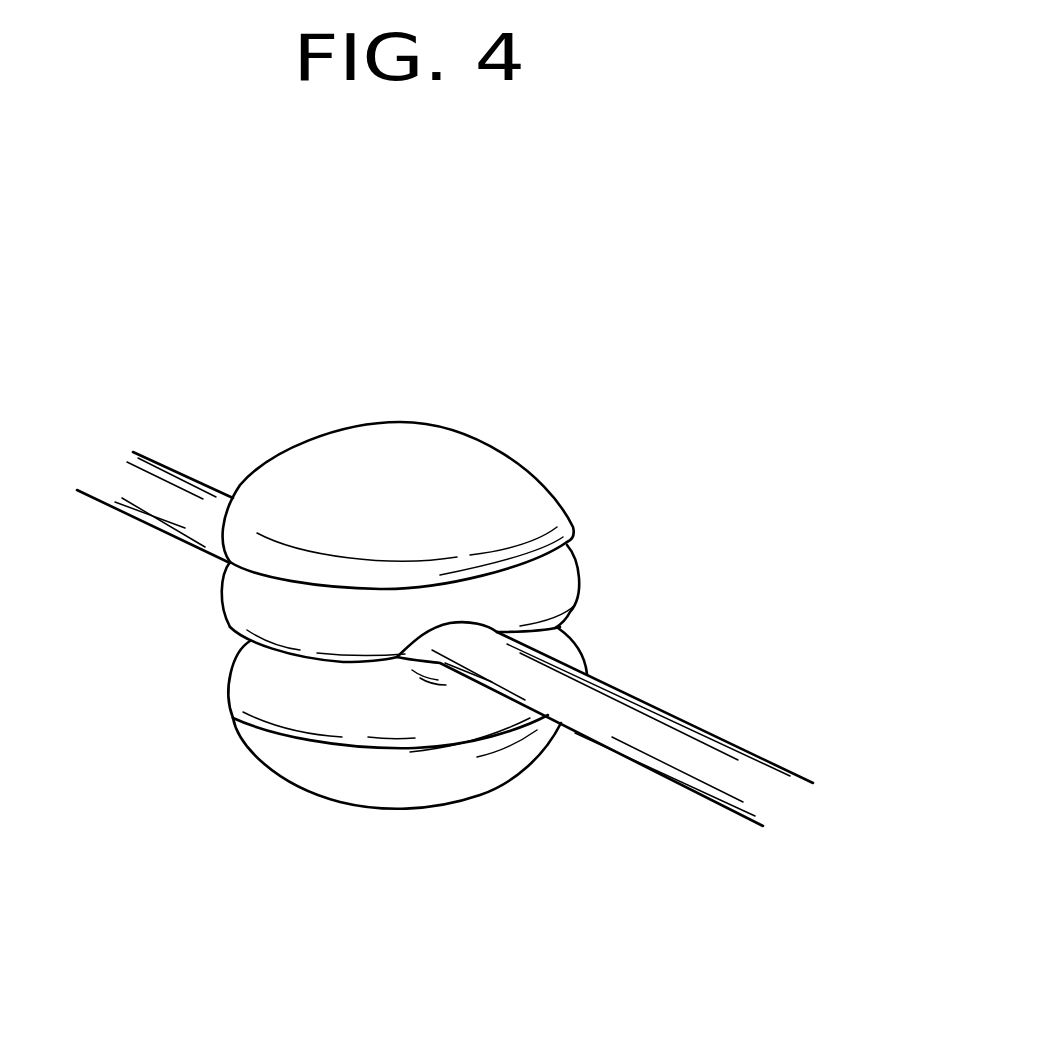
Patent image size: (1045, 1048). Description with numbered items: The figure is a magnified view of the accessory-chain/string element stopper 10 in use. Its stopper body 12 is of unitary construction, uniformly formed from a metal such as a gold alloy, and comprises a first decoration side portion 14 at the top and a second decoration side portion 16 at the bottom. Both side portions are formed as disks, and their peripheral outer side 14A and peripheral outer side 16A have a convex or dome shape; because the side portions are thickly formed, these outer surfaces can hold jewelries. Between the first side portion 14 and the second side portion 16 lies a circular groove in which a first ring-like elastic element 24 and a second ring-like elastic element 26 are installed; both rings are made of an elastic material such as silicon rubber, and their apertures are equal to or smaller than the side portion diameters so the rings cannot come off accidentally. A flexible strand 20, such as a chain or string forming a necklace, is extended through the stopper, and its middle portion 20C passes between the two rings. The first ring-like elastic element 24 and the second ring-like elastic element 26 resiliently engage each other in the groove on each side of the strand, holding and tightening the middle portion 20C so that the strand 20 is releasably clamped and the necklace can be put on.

The accessory-chain/string element stopper 10 is at (692, 388).
The stopper body 12 is at (268, 797).
The first decoration side portion 14 is at (428, 418).
The peripheral outer side 14A is at (493, 468).
The second decoration side portion 16 is at (430, 807).
The peripheral outer side 16A is at (363, 767).
The flexible strand 20 is at (677, 787).
The middle portion 20C is at (740, 747).
The first ring-like elastic element 24 is at (565, 572).
The second ring-like elastic element 26 is at (229, 683).